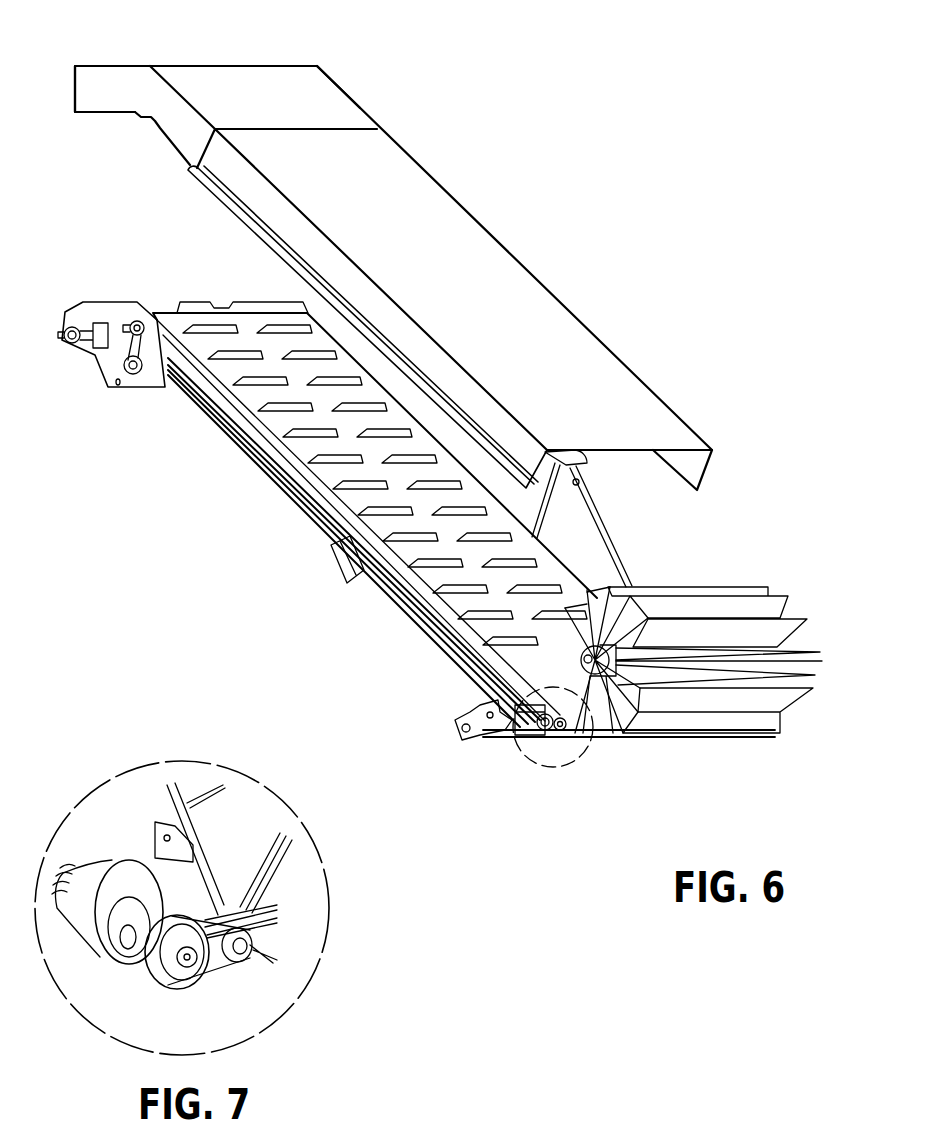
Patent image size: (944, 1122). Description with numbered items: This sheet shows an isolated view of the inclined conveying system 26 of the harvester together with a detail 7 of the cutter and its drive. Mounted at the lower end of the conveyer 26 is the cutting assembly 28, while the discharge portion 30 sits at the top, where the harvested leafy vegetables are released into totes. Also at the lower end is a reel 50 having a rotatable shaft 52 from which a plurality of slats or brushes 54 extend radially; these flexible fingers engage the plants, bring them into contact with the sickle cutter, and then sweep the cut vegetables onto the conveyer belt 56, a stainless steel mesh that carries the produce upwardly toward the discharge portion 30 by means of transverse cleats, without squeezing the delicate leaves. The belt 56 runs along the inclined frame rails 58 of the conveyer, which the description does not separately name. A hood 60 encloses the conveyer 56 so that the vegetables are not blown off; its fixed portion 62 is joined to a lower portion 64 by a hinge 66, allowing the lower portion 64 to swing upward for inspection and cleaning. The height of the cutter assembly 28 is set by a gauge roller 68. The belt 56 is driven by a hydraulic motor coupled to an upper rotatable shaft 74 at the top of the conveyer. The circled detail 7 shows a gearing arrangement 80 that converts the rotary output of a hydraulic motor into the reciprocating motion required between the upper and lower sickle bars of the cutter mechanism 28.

In FIG. 6, the detail view circle of FIG. 7 is at (547, 767).
In FIG. 6, the conveying system 26 is at (618, 279).
In FIG. 7, the conveying system 26 is at (253, 957).
In FIG. 6, the cutting assembly 28 is at (678, 737).
In FIG. 6, the discharge portion 30 is at (75, 84).
In FIG. 6, the reel 50 is at (792, 580).
In FIG. 6, the rotatable shaft 52 is at (795, 660).
In FIG. 6, the slats or brushes 54 is at (788, 700).
In FIG. 6, the conveyer belt 56 is at (332, 470).
In FIG. 6, the frame rail 58 is at (300, 442).
In FIG. 6, the hood 60 is at (490, 210).
In FIG. 6, the fixed portion 62 is at (350, 95).
In FIG. 6, the lower portion 64 is at (625, 372).
In FIG. 6, the hinge 66 is at (250, 128).
In FIG. 6, the gauge roller 68 is at (477, 737).
In FIG. 6, the upper rotatable shaft 74 is at (72, 322).
In FIG. 7, the gearing arrangement 80 is at (110, 860).